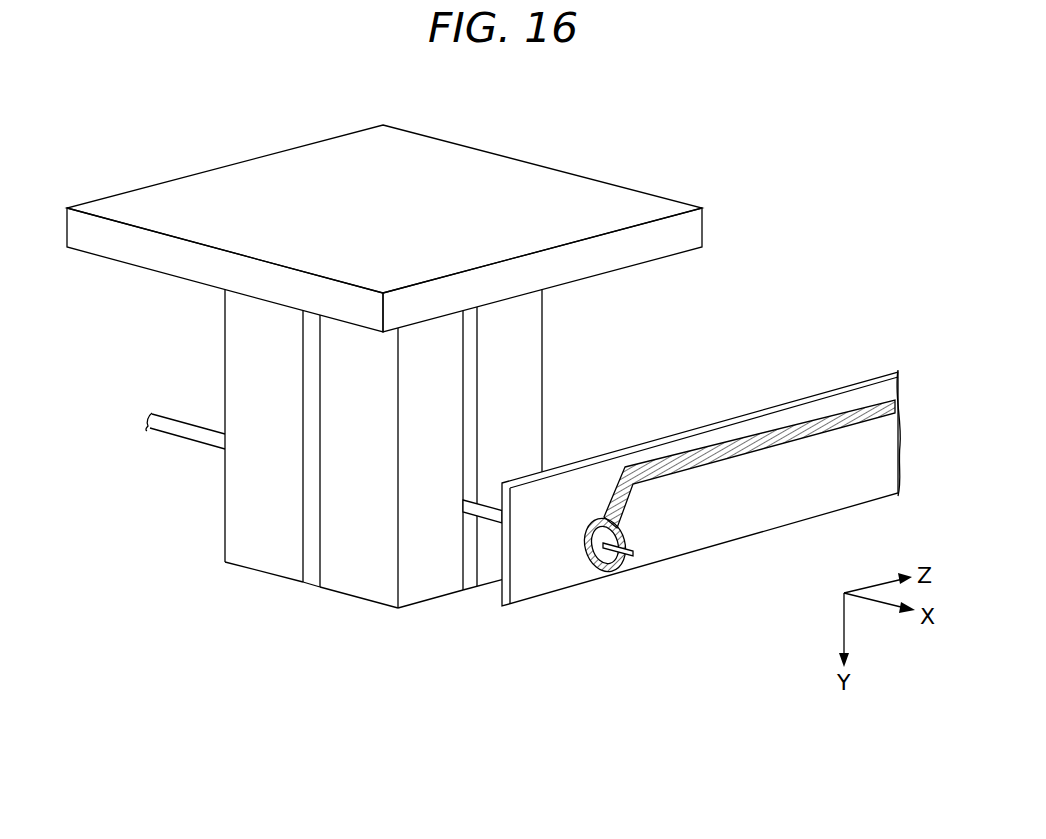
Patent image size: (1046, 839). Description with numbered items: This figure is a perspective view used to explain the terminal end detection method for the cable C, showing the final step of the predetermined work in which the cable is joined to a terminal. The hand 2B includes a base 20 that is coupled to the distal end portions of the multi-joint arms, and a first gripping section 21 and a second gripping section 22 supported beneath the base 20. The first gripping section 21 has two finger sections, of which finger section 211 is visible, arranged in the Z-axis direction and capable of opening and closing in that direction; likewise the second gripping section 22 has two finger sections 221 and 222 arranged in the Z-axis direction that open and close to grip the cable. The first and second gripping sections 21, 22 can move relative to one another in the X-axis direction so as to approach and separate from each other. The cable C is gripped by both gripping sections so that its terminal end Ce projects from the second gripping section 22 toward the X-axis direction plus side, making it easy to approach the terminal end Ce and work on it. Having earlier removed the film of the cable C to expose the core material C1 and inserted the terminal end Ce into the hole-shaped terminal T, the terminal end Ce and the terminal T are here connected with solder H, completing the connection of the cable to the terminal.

The probe-card / device assembly 2B is at (628, 172).
The base 20 is at (323, 183).
The first gripping section 21 is at (246, 519).
The finger section 211 is at (243, 362).
The second gripping section 22 is at (434, 583).
The finger section 221 is at (360, 578).
The finger section 222 is at (530, 370).
The cable C is at (492, 520).
The terminal T is at (585, 558).
The solder H is at (611, 536).
The core material C1 is at (608, 570).
The terminal end Ce is at (635, 553).